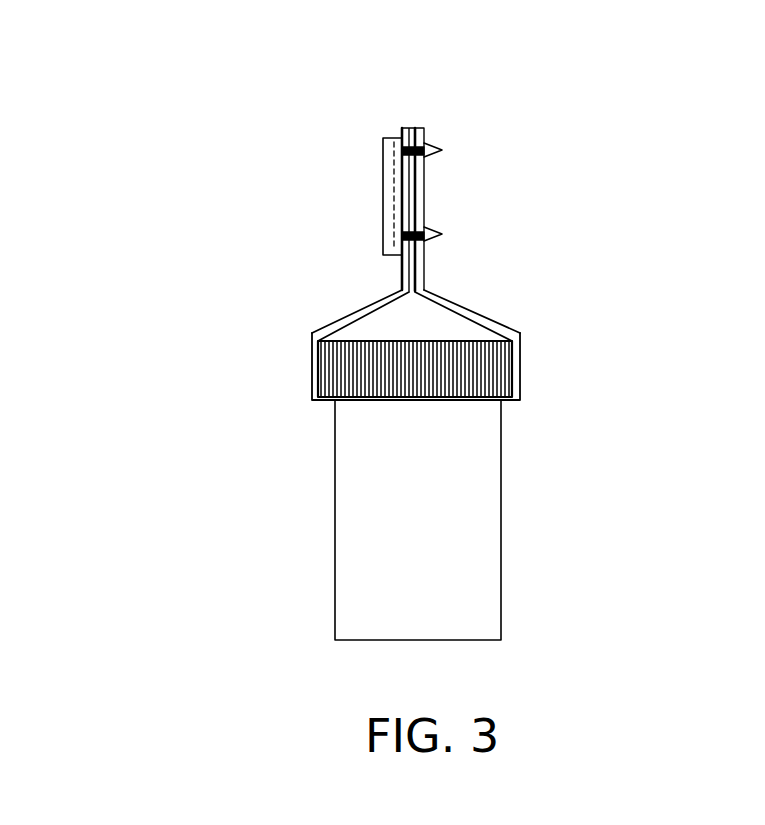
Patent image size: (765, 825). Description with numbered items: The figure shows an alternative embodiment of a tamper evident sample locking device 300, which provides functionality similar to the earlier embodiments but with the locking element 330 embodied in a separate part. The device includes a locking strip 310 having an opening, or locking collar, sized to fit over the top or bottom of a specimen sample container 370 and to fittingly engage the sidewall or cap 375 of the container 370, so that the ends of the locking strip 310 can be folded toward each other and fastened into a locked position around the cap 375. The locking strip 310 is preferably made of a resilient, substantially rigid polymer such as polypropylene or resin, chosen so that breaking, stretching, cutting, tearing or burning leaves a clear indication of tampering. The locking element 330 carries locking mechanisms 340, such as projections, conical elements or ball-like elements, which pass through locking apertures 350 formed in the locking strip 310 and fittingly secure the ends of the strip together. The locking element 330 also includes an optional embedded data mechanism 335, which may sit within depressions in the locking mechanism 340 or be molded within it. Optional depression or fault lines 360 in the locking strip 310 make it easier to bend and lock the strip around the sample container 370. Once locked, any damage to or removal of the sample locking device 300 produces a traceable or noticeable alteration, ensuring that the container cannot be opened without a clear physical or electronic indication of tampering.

The sample locking device 300 is at (214, 253).
The locking strip 310 is at (522, 365).
The locking element 330 is at (383, 198).
The embedded data mechanism 335 is at (383, 136).
The locking mechanisms 340 is at (437, 152).
The locking apertures 350 is at (426, 136).
The depression or fault lines 360 is at (311, 336).
The specimen sample container 370 is at (503, 528).
The cap 375 is at (330, 372).